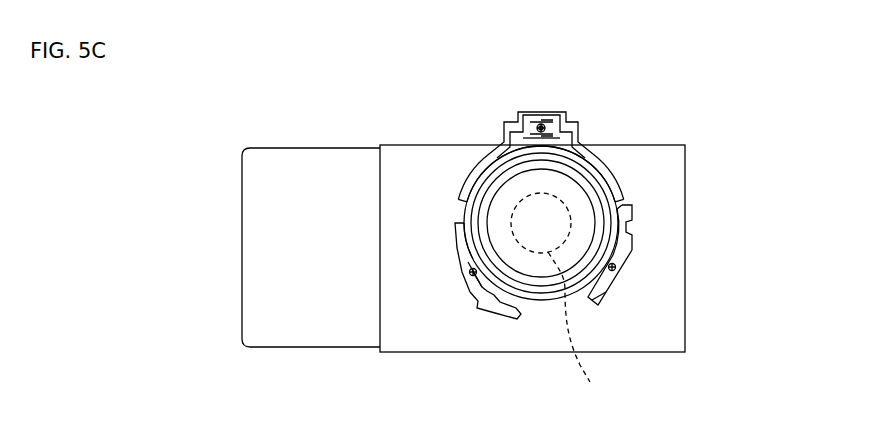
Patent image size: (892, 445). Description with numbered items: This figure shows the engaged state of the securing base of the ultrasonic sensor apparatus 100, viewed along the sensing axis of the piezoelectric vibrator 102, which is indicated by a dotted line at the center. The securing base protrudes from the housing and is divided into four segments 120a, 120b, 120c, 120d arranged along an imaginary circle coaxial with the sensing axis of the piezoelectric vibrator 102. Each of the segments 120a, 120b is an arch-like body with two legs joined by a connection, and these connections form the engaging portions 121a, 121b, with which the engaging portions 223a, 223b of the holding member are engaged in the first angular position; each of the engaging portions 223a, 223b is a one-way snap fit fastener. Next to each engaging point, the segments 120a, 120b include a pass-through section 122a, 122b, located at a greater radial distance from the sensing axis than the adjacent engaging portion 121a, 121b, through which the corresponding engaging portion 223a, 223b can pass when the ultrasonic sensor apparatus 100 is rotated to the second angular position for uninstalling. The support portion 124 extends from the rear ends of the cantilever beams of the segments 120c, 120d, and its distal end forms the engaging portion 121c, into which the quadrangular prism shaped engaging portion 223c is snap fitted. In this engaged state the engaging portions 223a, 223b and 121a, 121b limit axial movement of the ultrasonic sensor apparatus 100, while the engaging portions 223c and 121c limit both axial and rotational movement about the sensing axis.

The ultrasonic sensor apparatus 100 is at (695, 198).
The piezoelectric vibrator 102 is at (565, 298).
The segment 120a is at (458, 237).
The segment 120b is at (632, 222).
The segment 120c is at (480, 158).
The segment 120d is at (605, 166).
The engaging portion 121a is at (468, 268).
The engaging portion 121b is at (605, 283).
The engaging portion 121c is at (530, 114).
The pass-through section 122a is at (495, 294).
The pass-through section 122b is at (628, 245).
The support portion 124 is at (546, 102).
The engaging portion 223a is at (468, 283).
The engaging portion 223b is at (620, 270).
The engaging portion 223c is at (557, 128).